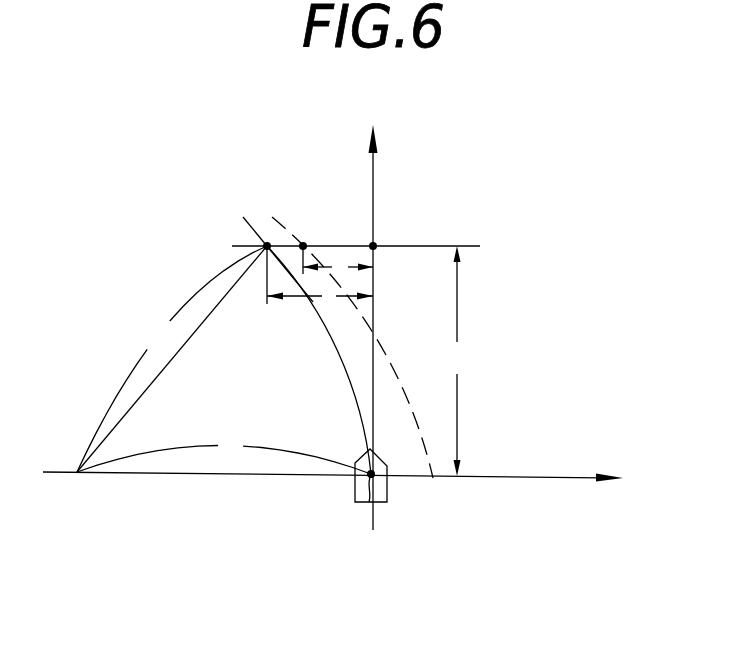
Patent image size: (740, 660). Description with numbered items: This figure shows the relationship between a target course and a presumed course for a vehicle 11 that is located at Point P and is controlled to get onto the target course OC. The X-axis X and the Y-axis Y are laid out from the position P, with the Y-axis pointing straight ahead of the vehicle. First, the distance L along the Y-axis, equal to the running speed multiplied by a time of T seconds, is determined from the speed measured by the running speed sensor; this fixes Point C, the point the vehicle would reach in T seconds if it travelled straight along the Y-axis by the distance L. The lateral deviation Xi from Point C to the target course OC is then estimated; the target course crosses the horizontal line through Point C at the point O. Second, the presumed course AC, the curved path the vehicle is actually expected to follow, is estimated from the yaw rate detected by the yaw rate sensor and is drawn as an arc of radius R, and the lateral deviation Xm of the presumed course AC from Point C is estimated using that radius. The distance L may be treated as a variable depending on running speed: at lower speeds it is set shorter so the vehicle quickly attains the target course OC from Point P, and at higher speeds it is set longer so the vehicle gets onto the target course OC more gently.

The vehicle 11 is at (355, 492).
The position of vehicle P is at (375, 515).
The point O is at (303, 244).
The Point C is at (376, 245).
The distance L is at (457, 361).
The radius of presumed course R is at (224, 360).
The presumed course AC is at (348, 385).
The target course OC is at (420, 420).
The X-axis X is at (345, 482).
The Y-axis Y is at (373, 309).
The lateral deviation xl Xi is at (340, 267).
The lateral deviation xm Xm is at (322, 296).